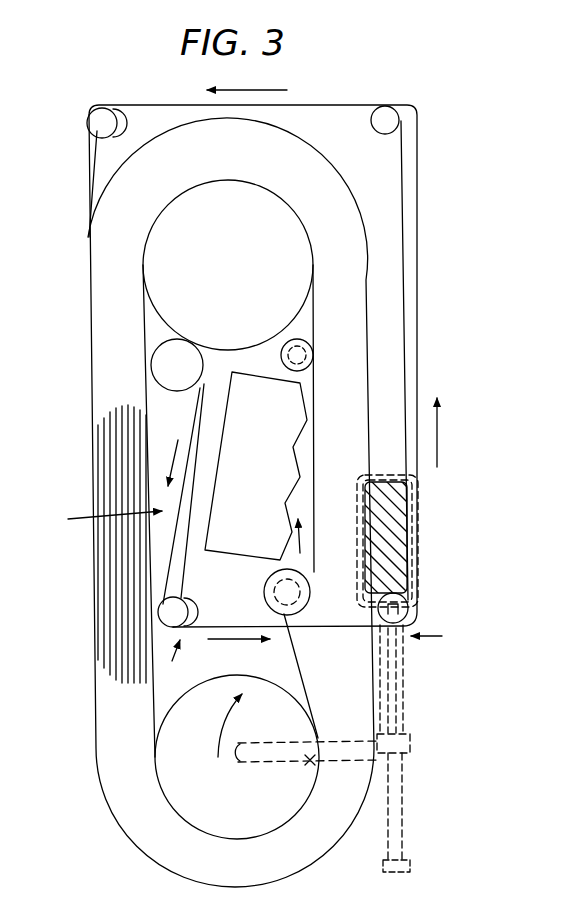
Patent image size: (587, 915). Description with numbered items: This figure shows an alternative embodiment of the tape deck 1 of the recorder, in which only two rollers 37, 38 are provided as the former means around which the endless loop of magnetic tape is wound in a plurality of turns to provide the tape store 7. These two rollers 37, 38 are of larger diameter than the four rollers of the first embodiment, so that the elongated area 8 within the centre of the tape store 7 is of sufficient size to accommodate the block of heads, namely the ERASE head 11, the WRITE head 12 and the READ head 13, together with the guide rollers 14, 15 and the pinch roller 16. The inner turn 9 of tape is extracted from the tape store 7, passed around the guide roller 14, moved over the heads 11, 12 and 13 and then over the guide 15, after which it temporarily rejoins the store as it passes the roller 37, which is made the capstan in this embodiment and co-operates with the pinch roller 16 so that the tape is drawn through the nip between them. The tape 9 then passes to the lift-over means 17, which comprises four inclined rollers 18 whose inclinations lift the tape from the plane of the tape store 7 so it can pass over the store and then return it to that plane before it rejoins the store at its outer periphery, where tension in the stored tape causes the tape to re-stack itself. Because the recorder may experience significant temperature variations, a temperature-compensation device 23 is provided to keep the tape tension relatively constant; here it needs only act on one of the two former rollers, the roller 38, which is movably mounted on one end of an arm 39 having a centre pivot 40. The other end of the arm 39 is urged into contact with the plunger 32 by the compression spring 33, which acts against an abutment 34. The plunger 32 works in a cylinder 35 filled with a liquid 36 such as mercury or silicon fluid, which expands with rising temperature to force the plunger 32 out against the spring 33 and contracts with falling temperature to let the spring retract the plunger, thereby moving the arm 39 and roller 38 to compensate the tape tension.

The tape deck 1 is at (72, 303).
The tape store 7 is at (115, 435).
The elongated area 8 is at (104, 520).
The inner turn of tape 9 is at (148, 415).
The ERASE head 11 is at (256, 466).
The WRITE head 12 is at (256, 466).
The READ head 13 is at (256, 414).
The guide roller 14 is at (266, 589).
The fixed guide 15 is at (282, 355).
The pinch roller 16 is at (155, 365).
The lift-over means 17 is at (170, 665).
The inclined rollers 18 is at (87, 123).
The temperature-compensation device 23 is at (443, 638).
The plunger 32 is at (402, 688).
The compression spring 33 is at (403, 813).
The abutment 34 is at (411, 868).
The cylinder 35 is at (372, 475).
The liquid 36 is at (422, 523).
The roller 37 is at (165, 235).
The roller 38 is at (156, 758).
The arm 39 is at (253, 760).
The centre pivot 40 is at (308, 772).